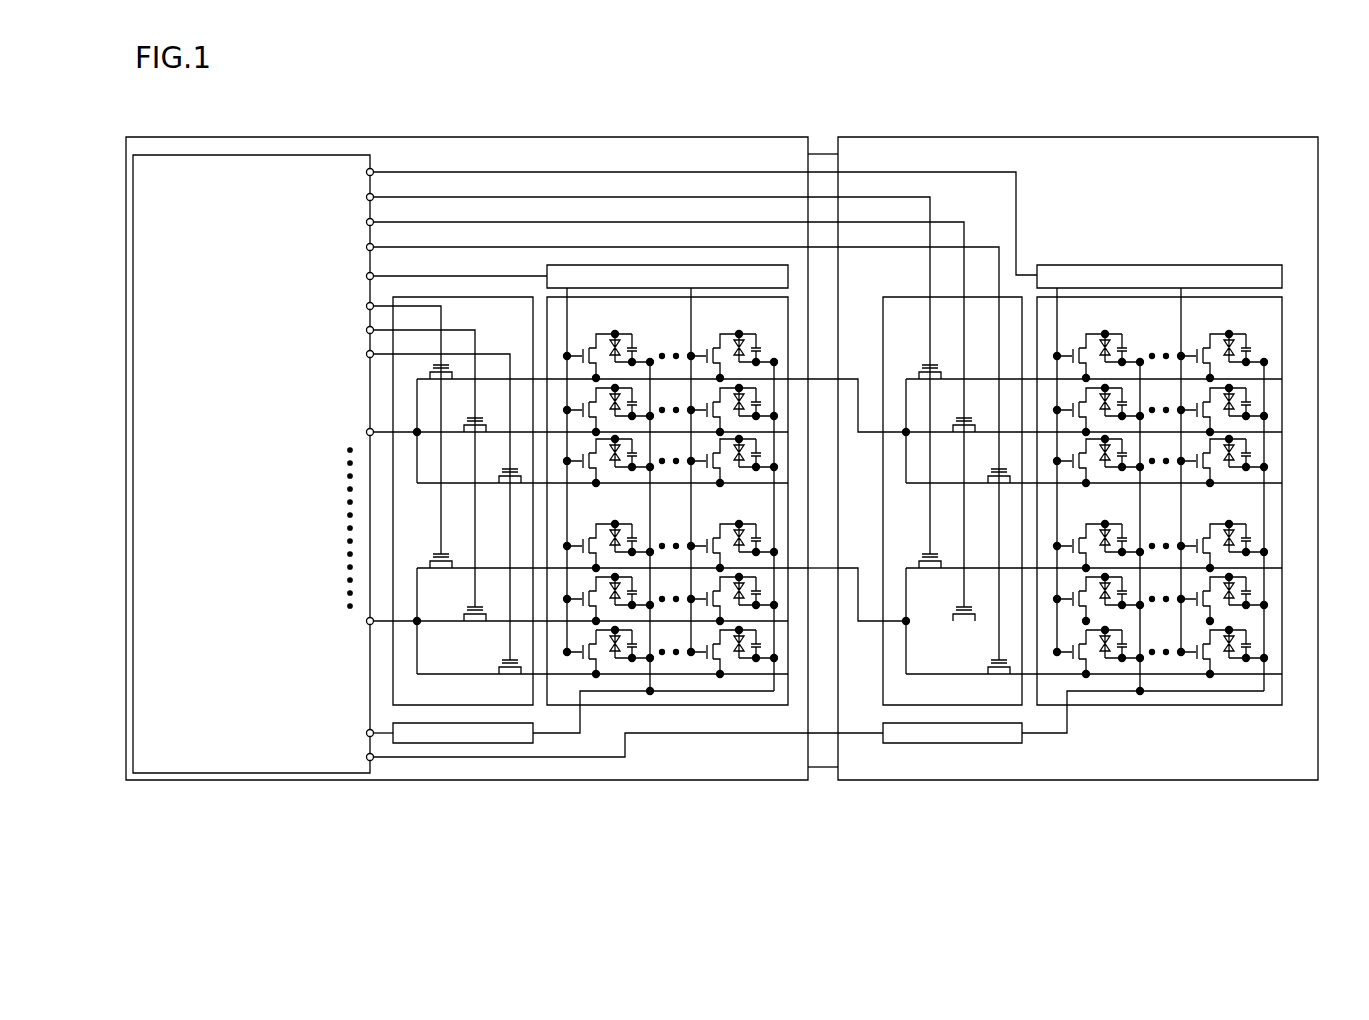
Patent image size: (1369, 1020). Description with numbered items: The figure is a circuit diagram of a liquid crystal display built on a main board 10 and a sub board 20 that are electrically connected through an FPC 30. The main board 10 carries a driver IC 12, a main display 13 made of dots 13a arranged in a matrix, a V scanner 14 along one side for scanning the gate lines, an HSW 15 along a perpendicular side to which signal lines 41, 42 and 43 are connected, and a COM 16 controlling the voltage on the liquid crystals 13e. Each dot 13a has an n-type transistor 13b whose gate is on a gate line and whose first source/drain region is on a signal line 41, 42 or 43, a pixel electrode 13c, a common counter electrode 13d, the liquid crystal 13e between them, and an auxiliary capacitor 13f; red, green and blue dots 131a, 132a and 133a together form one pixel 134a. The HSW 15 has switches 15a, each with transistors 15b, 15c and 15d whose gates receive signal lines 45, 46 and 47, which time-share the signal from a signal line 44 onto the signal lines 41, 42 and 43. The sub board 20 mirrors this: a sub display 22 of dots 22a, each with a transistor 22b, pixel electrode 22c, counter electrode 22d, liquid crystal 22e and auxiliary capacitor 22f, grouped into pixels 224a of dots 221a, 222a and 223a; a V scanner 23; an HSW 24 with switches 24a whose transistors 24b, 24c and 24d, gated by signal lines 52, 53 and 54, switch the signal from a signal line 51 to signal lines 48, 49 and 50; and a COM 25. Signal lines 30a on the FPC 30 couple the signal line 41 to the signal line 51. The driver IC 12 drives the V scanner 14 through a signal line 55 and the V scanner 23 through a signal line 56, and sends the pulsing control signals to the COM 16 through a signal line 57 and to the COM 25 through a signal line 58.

The main board 10 is at (291, 137).
The driver IC 12 is at (338, 155).
The main display 13 is at (783, 705).
The dot 13a is at (673, 743).
The n-type transistor 13b is at (575, 657).
The pixel electrode 13c is at (606, 650).
The counter electrode 13d is at (614, 641).
The liquid crystal 13e is at (605, 638).
The auxiliary capacitor 13f is at (633, 644).
The V scanner 14 is at (785, 265).
The HSW 15 is at (419, 297).
The switch 15a is at (487, 706).
The n-type transistor 15b is at (433, 578).
The n-type transistor 15c is at (475, 605).
The n-type transistor 15d is at (510, 667).
The COM 16 is at (398, 745).
The sub board 20 is at (1318, 137).
The sub display 22 is at (1275, 705).
The dot 22a is at (1163, 743).
The n-type transistor 22b is at (1065, 657).
The pixel electrode 22c is at (1096, 650).
The counter electrode 22d is at (1104, 641).
The liquid crystal 22e is at (1095, 638).
The auxiliary capacitor 22f is at (1123, 644).
The V scanner 23 is at (1272, 265).
The HSW 24 is at (880, 328).
The switch 24a is at (976, 706).
The n-type transistor 24b is at (920, 578).
The n-type transistor 24c is at (965, 605).
The n-type transistor 24d is at (1000, 667).
The COM 25 is at (888, 745).
The FPC 30 is at (822, 154).
The signal line 30a is at (822, 568).
The signal line 41 is at (557, 379).
The signal line 42 is at (557, 432).
The signal line 43 is at (557, 483).
The signal line 44 is at (398, 622).
The signal line 45 is at (437, 306).
The signal line 46 is at (460, 330).
The signal line 47 is at (495, 354).
The signal line 48 is at (1047, 379).
The signal line 49 is at (1047, 432).
The signal line 50 is at (1047, 483).
The signal line 51 is at (858, 622).
The signal line 52 is at (915, 197).
The signal line 53 is at (945, 222).
The signal line 54 is at (977, 247).
The signal line 55 is at (403, 276).
The signal line 56 is at (891, 172).
The signal line 57 is at (381, 735).
The signal line 58 is at (809, 767).
The dot 131a is at (732, 316).
The dot 132a is at (715, 385).
The dot 133a is at (752, 76).
The pixel 134a is at (681, 262).
The dot 221a is at (1225, 316).
The dot 222a is at (1205, 385).
The dot 223a is at (1237, 76).
The pixel 224a is at (1171, 262).